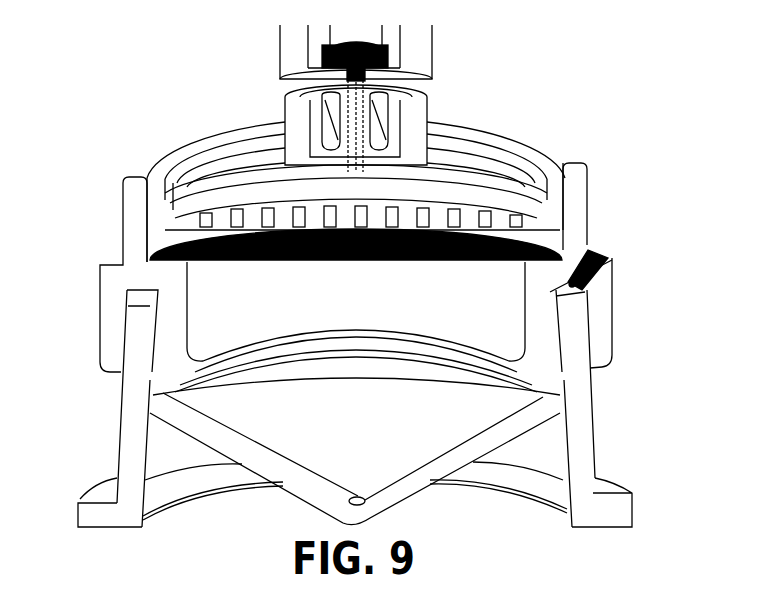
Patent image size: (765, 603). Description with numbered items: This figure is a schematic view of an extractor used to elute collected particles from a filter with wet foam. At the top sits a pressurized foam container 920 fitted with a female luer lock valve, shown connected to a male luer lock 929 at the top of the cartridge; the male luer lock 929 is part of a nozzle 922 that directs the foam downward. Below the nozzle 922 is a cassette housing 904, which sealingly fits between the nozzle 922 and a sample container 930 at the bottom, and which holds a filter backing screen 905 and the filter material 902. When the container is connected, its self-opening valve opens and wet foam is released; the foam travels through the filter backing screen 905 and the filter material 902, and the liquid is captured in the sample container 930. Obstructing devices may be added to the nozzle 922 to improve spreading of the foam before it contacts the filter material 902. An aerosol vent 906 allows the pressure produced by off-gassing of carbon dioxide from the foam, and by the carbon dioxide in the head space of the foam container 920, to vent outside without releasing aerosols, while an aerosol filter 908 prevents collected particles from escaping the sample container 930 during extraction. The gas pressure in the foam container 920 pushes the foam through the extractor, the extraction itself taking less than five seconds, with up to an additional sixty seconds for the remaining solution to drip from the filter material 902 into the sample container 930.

The filter material 902 is at (176, 238).
The cassette housing 904 is at (128, 262).
The filter backing screen 905 is at (220, 222).
The aerosol vent 906 is at (581, 292).
The aerosol filter 908 is at (590, 270).
The pressurized foam container 920 is at (298, 44).
The nozzle 922 is at (248, 185).
The male luer lock 929 is at (318, 113).
The sample container 930 is at (140, 398).